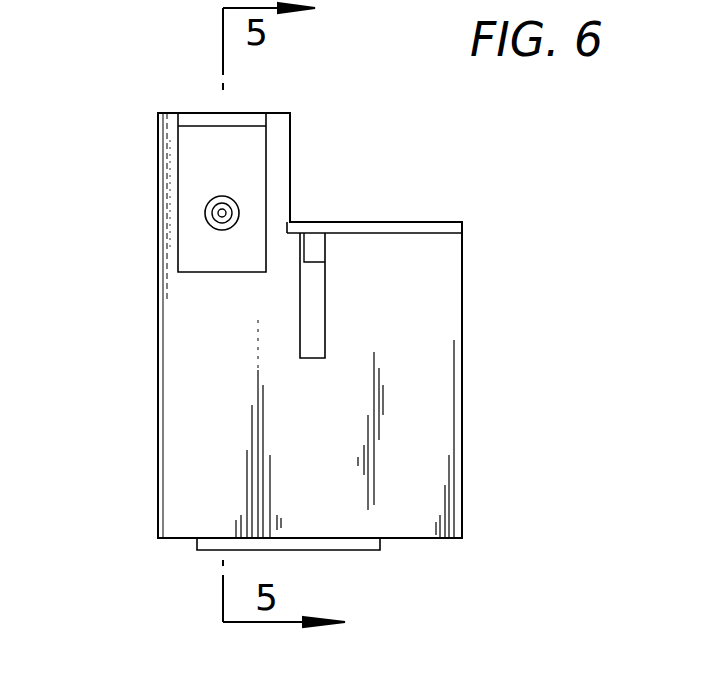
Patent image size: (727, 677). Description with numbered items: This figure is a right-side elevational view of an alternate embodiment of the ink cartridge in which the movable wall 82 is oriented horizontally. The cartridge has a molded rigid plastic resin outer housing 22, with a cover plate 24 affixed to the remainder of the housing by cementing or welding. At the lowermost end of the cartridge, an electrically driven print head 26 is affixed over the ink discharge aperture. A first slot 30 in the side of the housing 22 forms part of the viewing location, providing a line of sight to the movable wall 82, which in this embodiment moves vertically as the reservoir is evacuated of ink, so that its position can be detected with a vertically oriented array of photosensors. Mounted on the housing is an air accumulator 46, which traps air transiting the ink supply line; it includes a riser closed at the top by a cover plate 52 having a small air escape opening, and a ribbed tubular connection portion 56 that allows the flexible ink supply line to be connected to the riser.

The outer housing 22 is at (462, 362).
The cover plate 24 is at (413, 222).
The print head 26 is at (362, 550).
The first slot 30 is at (317, 308).
The air accumulator 46 is at (178, 153).
The cover plate 52 is at (233, 112).
The ribbed tubular connection portion 56 is at (218, 213).
The movable wall 82 is at (311, 250).